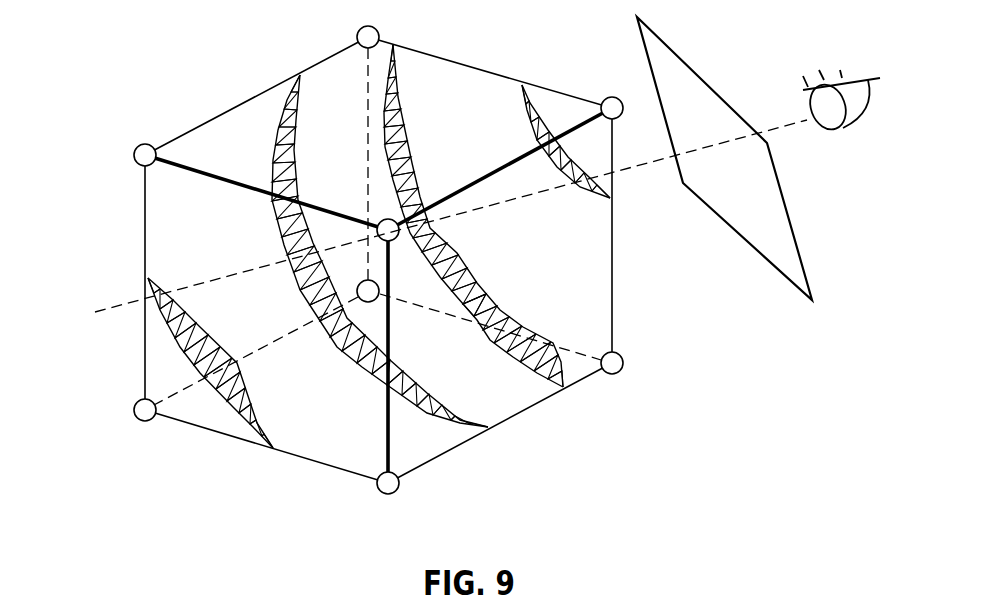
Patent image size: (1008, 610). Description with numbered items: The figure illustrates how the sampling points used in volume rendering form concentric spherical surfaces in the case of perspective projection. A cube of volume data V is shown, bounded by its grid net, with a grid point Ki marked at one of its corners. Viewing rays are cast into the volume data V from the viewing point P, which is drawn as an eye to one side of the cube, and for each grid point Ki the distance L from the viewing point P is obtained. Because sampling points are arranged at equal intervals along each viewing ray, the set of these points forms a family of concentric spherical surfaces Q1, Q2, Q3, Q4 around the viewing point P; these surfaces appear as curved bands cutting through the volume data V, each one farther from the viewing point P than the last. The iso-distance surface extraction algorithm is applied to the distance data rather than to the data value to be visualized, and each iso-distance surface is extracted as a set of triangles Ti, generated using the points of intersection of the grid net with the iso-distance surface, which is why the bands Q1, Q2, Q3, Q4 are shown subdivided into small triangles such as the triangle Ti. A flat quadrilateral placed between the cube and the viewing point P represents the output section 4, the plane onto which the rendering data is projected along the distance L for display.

The volume data V is at (155, 230).
The grid point Ki is at (613, 90).
The concentric spherical surface Q1 is at (523, 125).
The concentric spherical surface Q2 is at (500, 352).
The concentric spherical surface Q3 is at (345, 357).
The concentric spherical surface Q4 is at (233, 413).
The triangle Ti is at (493, 297).
The distance L is at (648, 163).
The viewing point P is at (841, 114).
The output section 4 is at (775, 247).